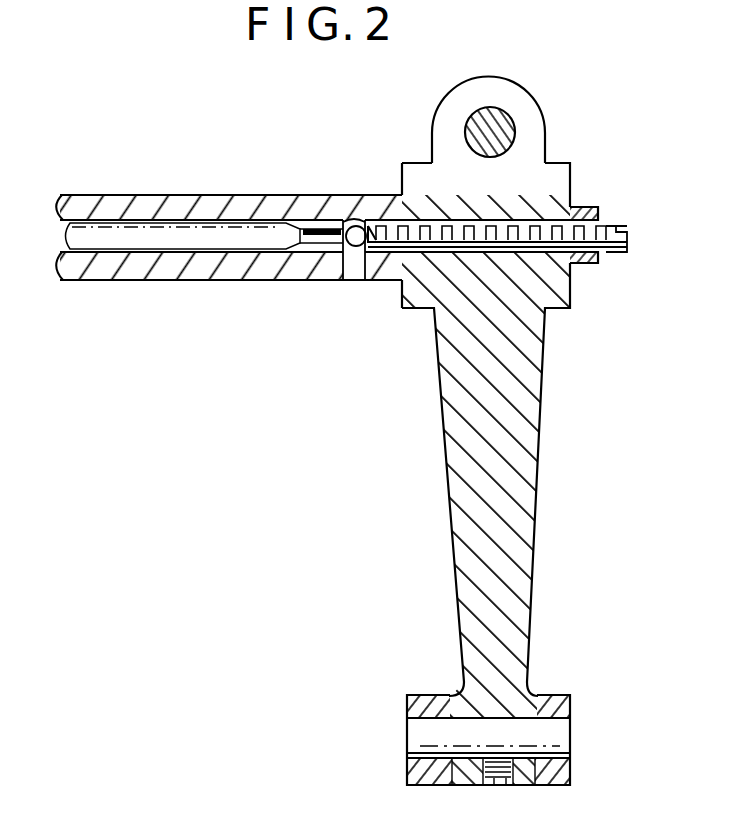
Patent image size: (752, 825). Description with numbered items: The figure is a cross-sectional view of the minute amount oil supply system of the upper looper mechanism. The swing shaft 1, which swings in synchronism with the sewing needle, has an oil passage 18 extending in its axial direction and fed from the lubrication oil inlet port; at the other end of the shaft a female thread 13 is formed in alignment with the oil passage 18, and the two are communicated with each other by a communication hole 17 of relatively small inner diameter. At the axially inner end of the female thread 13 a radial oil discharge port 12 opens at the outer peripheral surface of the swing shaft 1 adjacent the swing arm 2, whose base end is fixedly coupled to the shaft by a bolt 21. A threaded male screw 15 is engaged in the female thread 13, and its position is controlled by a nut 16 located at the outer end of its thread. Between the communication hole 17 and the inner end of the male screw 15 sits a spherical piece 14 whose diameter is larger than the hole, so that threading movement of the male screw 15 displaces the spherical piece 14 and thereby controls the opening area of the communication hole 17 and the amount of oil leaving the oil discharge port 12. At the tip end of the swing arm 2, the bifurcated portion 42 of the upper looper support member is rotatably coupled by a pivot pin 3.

The swing shaft 1 is at (180, 207).
The swing arm 2 is at (517, 536).
The pivot pin 3 is at (557, 743).
The oil discharge port 12 is at (347, 281).
The female thread 13 is at (393, 266).
The spherical piece 14 is at (352, 228).
The male screw 15 is at (626, 254).
The nut 16 is at (590, 206).
The communication hole 17 is at (308, 230).
The oil passage 18 is at (180, 250).
The bolt 21 is at (470, 130).
The bifurcated portion 42 is at (417, 773).